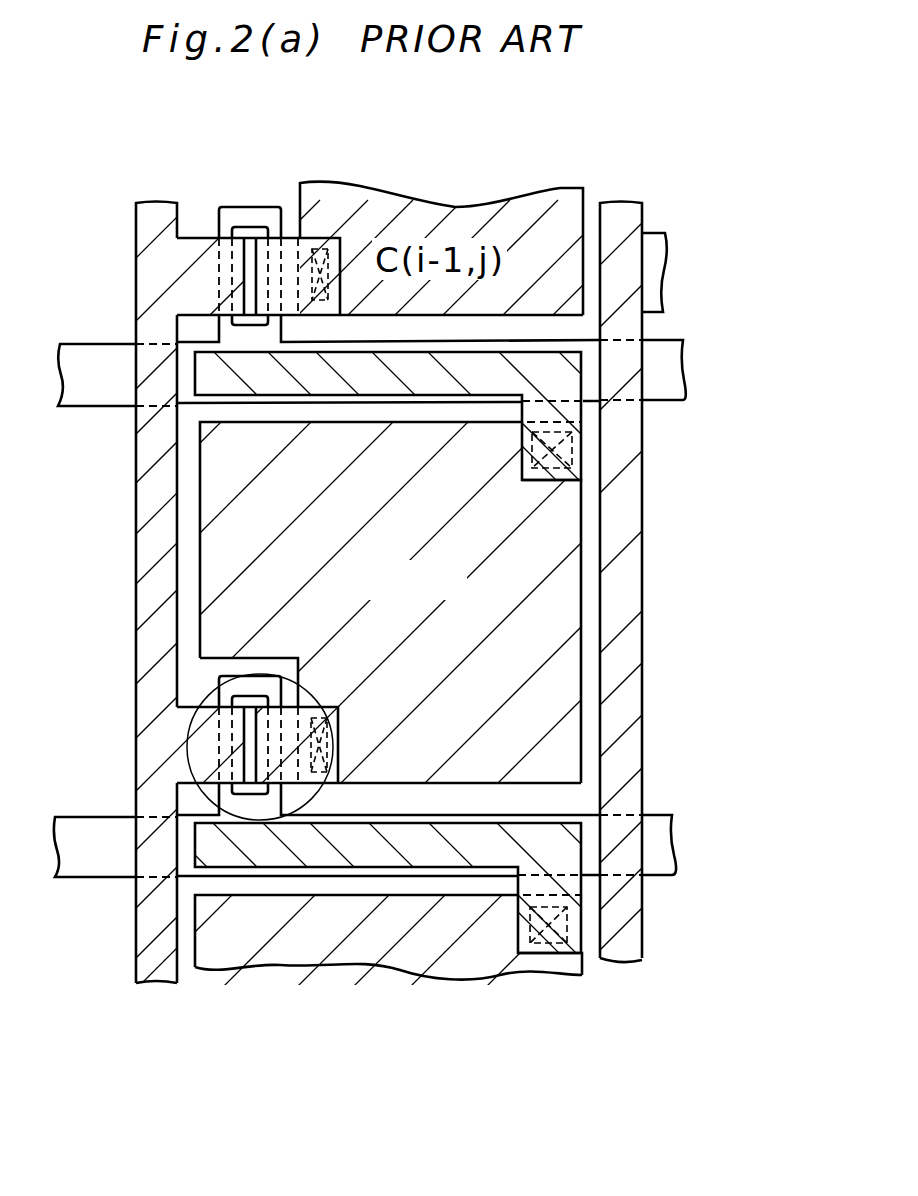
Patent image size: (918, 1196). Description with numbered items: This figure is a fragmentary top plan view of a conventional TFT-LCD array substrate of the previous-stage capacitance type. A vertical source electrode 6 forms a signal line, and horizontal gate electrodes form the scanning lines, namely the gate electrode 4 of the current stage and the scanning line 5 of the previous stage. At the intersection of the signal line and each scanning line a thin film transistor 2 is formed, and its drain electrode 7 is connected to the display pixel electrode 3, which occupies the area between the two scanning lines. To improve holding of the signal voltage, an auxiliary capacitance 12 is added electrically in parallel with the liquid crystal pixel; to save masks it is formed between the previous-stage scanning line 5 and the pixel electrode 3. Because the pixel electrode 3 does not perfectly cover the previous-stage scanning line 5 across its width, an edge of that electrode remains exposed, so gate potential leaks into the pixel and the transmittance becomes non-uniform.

The source electrode 6 is at (163, 272).
The scanning line at a previous stage 5 is at (100, 390).
The gate electrode 4 is at (90, 830).
The auxiliary capacitance 12 is at (480, 367).
The pixel electrode 3 is at (459, 595).
The drain electrode 7 is at (288, 770).
The thin film transistor 2 is at (330, 783).